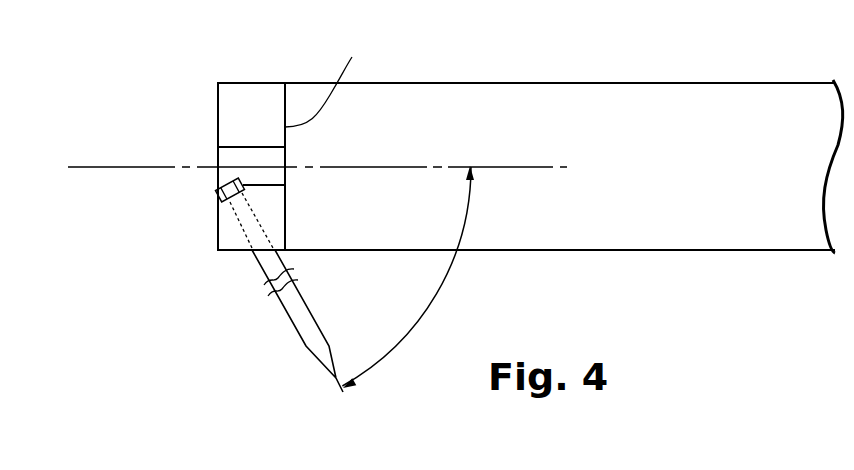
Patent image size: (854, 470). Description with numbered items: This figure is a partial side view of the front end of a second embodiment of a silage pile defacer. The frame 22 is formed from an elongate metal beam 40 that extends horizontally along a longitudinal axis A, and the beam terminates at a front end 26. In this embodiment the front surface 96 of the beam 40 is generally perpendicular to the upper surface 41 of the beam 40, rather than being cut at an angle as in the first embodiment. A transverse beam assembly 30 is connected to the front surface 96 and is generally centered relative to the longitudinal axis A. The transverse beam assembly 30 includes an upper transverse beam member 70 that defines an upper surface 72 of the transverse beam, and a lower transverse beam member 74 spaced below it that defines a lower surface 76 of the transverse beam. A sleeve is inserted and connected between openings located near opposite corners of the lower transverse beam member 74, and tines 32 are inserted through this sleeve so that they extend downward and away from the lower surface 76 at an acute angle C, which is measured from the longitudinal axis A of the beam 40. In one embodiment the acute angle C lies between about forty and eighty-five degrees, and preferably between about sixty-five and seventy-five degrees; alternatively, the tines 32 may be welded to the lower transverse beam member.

The frame 22 is at (505, 75).
The front end 26 is at (305, 97).
The transverse beam assembly 30 is at (261, 76).
The tines 32 is at (311, 318).
The first elongate metal beam 40 is at (712, 98).
The upper surface 41 is at (592, 82).
The upper transverse beam member 70 is at (226, 115).
The upper surface 72 is at (228, 82).
The lower transverse beam member 74 is at (225, 225).
The lower surface 76 is at (226, 252).
The front surface 96 is at (330, 81).
The longitudinal axis A is at (87, 165).
The acute angle C is at (436, 300).